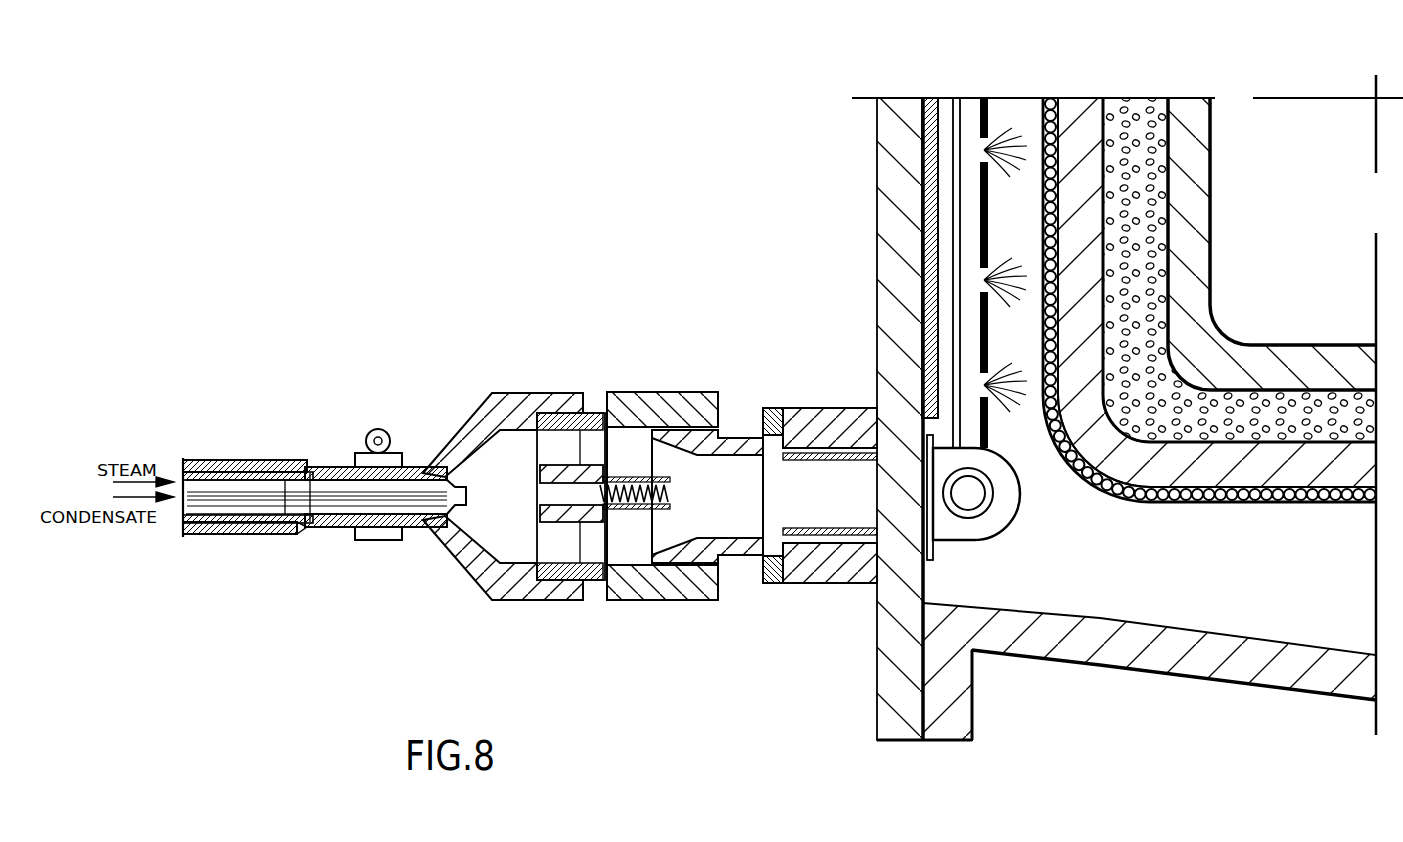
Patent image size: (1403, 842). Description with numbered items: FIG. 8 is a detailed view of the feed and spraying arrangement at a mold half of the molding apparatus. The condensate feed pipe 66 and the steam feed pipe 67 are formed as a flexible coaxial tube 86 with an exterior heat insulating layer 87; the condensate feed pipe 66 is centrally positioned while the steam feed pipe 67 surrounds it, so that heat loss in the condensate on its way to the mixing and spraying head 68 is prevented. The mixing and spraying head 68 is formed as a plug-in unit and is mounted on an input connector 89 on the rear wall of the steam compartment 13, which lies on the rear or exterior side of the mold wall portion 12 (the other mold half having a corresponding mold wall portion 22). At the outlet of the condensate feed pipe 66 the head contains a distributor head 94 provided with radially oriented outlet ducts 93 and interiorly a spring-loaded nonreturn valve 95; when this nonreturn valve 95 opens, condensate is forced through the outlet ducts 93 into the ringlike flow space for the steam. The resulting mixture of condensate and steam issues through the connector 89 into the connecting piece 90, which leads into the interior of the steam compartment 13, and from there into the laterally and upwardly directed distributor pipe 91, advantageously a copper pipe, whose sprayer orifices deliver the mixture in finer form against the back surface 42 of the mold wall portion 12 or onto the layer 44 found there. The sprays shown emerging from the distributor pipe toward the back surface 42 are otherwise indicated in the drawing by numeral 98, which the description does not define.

The mold wall portion 12 is at (1290, 472).
The steam compartment 13 is at (1135, 582).
The mold wall portion 22 is at (1322, 362).
The back surface 42 is at (1048, 150).
The layer 44 is at (1040, 150).
The condensate feed pipe 66 is at (194, 485).
The steam feed pipe 67 is at (237, 485).
The mixing and spraying head 68 is at (653, 585).
The flexible coaxial tube 86 is at (276, 536).
The heat insulating layer 87 is at (277, 460).
The input connector 89 is at (822, 410).
The connecting piece 90 is at (980, 528).
The distributor pipe 91 is at (970, 200).
The outlet ducts 93 is at (567, 420).
The distributor head 94 is at (557, 472).
The spring-loaded nonreturn valve 95 is at (587, 487).
The spray nozzles 98 is at (985, 386).